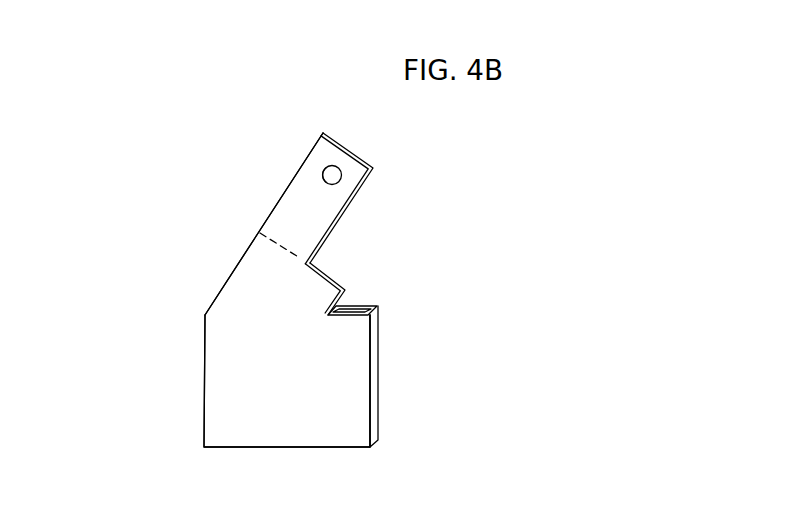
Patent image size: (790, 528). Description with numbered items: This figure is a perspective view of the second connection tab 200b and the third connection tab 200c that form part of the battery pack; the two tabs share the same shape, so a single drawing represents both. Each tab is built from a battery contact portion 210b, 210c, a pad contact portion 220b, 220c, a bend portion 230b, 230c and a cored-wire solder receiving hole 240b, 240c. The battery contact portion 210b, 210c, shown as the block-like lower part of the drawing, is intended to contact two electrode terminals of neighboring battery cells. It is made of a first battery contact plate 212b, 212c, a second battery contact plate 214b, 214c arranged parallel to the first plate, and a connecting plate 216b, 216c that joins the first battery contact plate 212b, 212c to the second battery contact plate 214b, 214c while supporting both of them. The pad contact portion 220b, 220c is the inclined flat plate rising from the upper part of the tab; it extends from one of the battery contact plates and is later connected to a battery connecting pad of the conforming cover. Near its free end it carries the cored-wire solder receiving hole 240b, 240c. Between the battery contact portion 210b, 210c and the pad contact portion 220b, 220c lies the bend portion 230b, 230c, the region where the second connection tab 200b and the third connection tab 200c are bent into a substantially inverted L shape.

The second connection tab 200b is at (207, 290).
The third connection tab 200c is at (167, 243).
The pad contact portion 220b is at (274, 224).
The pad contact portion 220c is at (292, 200).
The cored-wire solder receiving hole 240b is at (421, 193).
The cored-wire solder receiving hole 240c is at (340, 182).
The bend portion 230b is at (398, 281).
The bend portion 230c is at (300, 258).
The battery contact portion 210b is at (433, 365).
The battery contact portion 210c is at (433, 365).
The second battery contact plate 214b is at (432, 299).
The second battery contact plate 214c is at (365, 307).
The connecting plate 216b is at (453, 376).
The connecting plate 216c is at (373, 325).
The first battery contact plate 212b is at (370, 381).
The first battery contact plate 212c is at (345, 316).